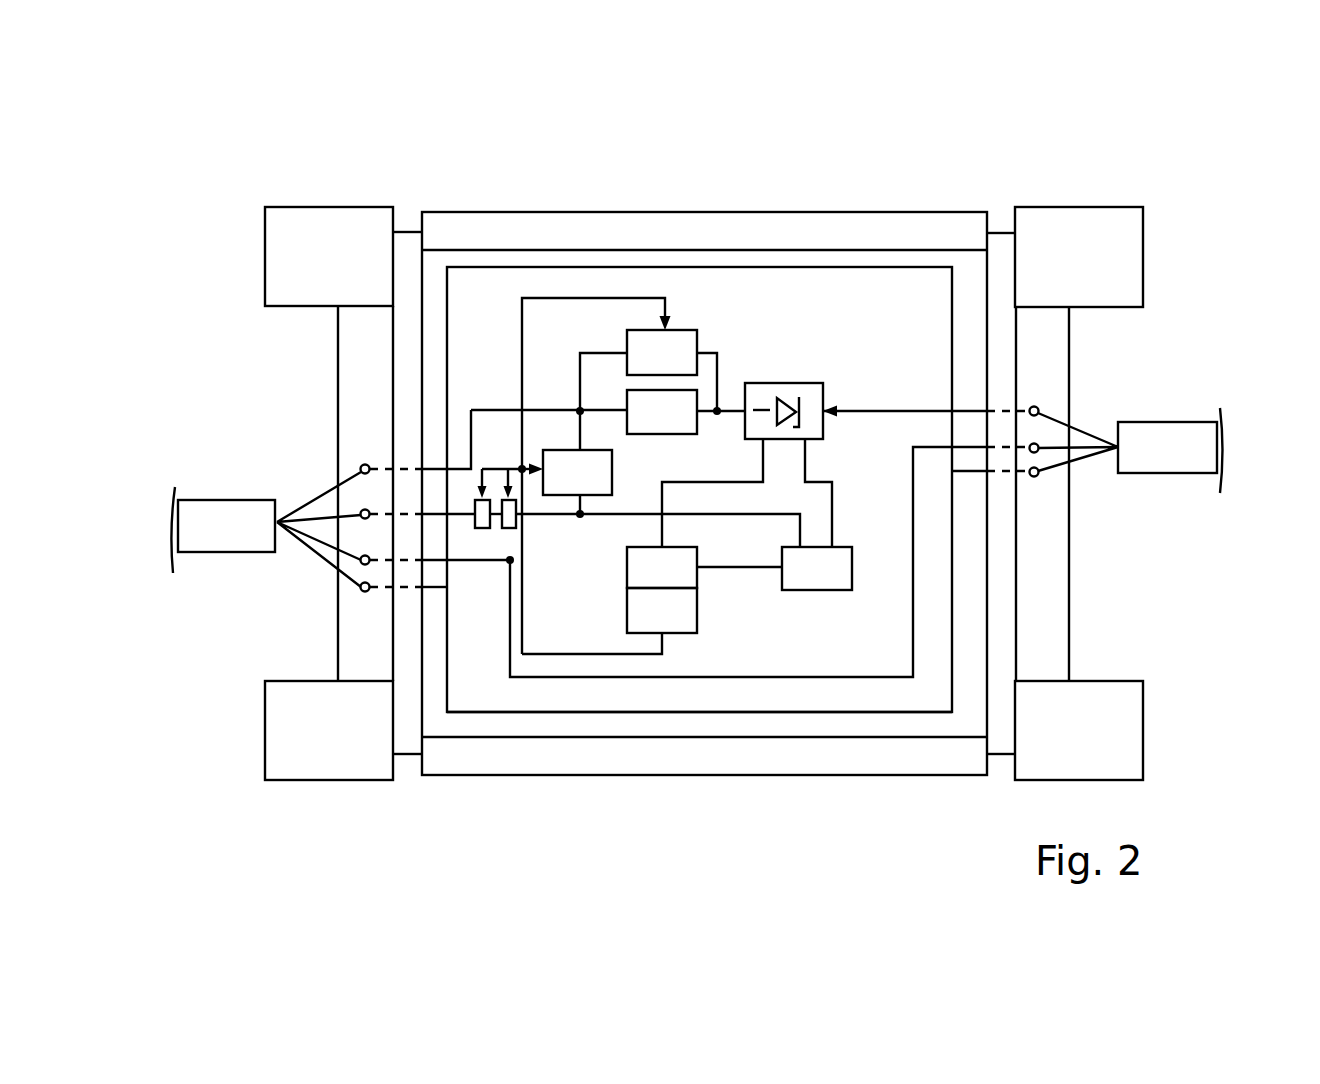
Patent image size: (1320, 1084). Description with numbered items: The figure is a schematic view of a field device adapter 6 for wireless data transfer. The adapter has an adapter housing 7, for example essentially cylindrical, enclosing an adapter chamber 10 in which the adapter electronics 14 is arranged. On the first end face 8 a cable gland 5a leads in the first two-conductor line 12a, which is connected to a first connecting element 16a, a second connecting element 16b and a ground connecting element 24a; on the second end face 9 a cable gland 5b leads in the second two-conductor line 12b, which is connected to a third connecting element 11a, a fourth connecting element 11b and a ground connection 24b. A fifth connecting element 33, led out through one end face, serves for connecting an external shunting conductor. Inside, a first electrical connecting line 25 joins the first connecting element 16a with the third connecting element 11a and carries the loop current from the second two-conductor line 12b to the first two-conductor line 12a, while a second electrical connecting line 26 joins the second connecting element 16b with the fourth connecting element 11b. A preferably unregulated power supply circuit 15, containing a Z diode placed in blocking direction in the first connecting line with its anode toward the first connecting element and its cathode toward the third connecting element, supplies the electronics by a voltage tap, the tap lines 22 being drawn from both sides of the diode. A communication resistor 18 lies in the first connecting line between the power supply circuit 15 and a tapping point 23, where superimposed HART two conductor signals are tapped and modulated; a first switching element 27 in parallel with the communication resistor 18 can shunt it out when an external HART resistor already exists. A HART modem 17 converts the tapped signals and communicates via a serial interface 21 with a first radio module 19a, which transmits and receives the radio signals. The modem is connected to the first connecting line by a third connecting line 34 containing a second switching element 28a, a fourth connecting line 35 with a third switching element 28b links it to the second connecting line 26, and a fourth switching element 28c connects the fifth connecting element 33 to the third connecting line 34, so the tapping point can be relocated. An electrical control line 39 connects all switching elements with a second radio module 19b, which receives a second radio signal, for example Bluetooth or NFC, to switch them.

The cable gland 5a is at (281, 238).
The first end face 8 is at (248, 211).
The cable gland 5b is at (1127, 231).
The second end face 9 is at (1174, 226).
The field device adapter 6 is at (1127, 207).
The adapter housing 7 is at (872, 212).
The adapter chamber 10 is at (906, 250).
The adapter electronics 14 is at (556, 265).
The first two-conductor line 12a is at (250, 537).
The second two-conductor line 12b is at (1197, 432).
The power supply circuit 15 is at (784, 392).
The first connecting element 16a is at (350, 458).
The second connecting element 16b is at (349, 574).
The HART modem 17 is at (834, 583).
The communication resistor 18 is at (679, 426).
The first radio module 19a is at (687, 583).
The second radio module 19b is at (687, 626).
The serial interface 21 is at (748, 568).
The measuring lines 22 is at (760, 455).
The tapping point 23 is at (578, 408).
The ground connecting element 24a is at (350, 605).
The ground connection 24b is at (1047, 488).
The first electrical connecting line 25 is at (490, 408).
The second electrical connecting line 26 is at (858, 712).
The first switching element 27 is at (679, 367).
The second switching element 28a is at (602, 487).
The third switching element 28b is at (503, 525).
The fourth switching element 28c is at (482, 518).
The fifth connecting element 33 is at (347, 501).
The third connecting line 34 is at (580, 433).
The fourth connecting line 35 is at (557, 518).
The electrical control line 39 is at (605, 654).
The third connecting element 11a is at (1055, 398).
The fourth connecting element 11b is at (1051, 463).